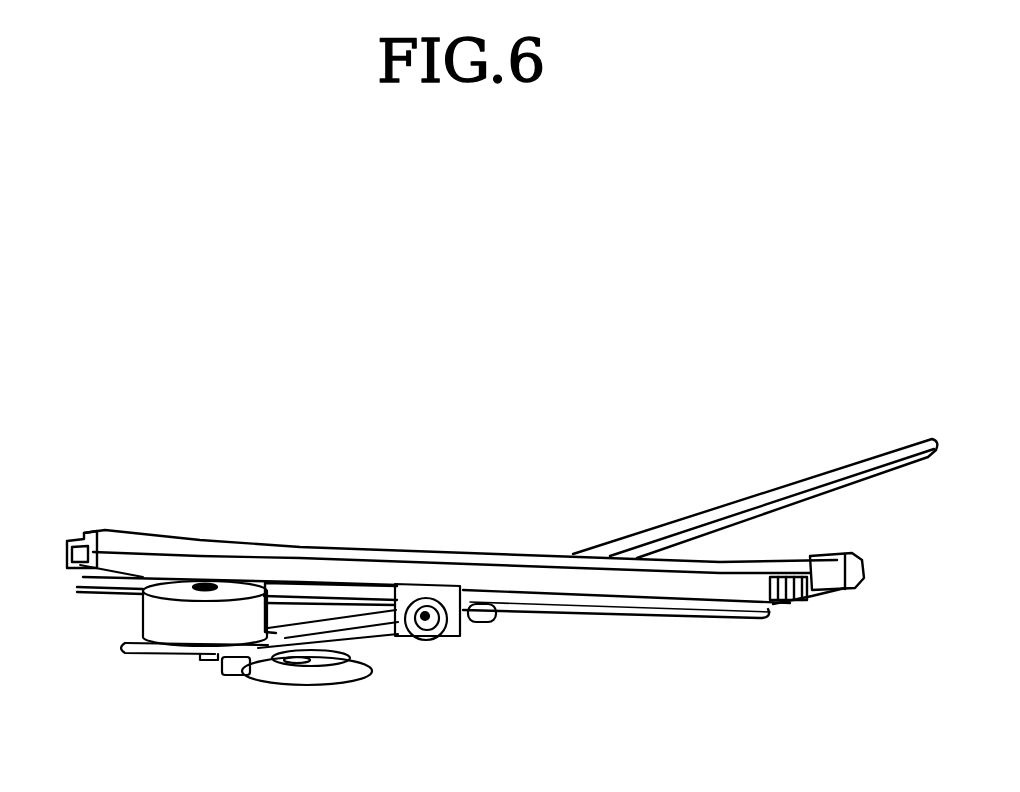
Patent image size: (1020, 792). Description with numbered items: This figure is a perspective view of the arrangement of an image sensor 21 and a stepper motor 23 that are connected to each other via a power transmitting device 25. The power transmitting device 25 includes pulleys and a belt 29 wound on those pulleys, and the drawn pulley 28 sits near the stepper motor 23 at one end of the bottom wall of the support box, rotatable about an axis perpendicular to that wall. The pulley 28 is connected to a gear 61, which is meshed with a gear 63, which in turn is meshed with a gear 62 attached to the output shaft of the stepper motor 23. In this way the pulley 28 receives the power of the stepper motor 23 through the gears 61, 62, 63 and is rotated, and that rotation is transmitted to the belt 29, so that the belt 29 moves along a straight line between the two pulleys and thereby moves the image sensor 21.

The image sensor 21 is at (752, 588).
The stepper motor 23 is at (166, 622).
The power transmitting device 25 is at (522, 648).
The pulley 28 is at (372, 665).
The belt 29 is at (863, 477).
The gear 61 is at (337, 681).
The gear 62 is at (203, 660).
The gear 63 is at (253, 672).